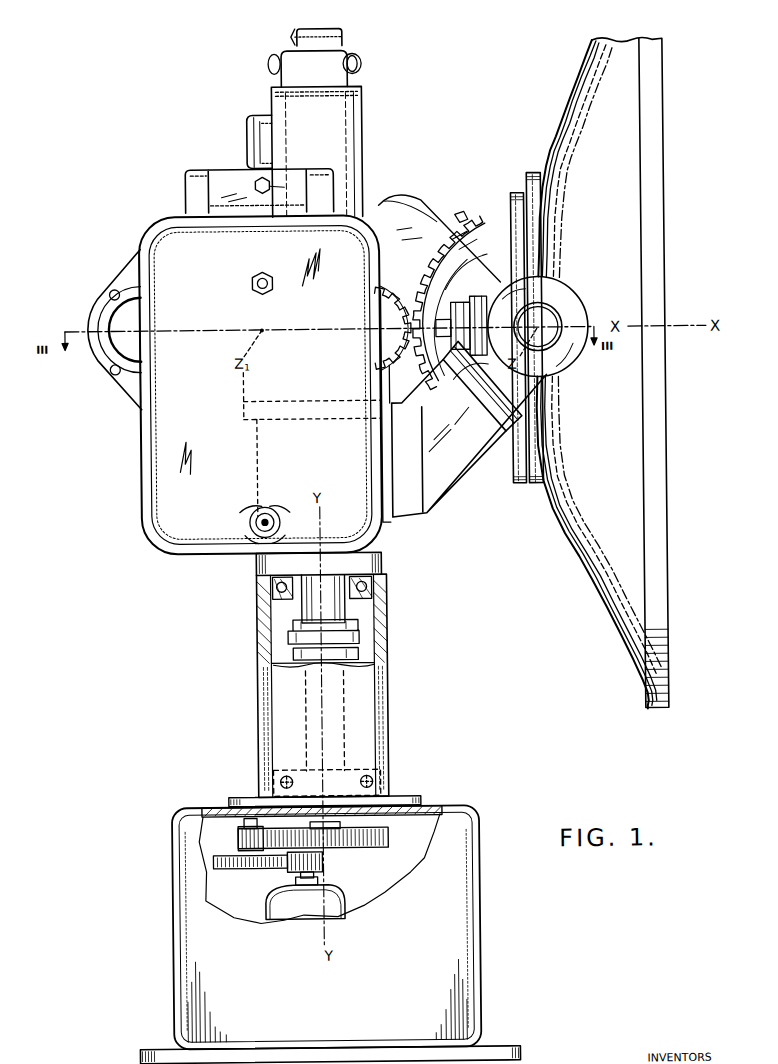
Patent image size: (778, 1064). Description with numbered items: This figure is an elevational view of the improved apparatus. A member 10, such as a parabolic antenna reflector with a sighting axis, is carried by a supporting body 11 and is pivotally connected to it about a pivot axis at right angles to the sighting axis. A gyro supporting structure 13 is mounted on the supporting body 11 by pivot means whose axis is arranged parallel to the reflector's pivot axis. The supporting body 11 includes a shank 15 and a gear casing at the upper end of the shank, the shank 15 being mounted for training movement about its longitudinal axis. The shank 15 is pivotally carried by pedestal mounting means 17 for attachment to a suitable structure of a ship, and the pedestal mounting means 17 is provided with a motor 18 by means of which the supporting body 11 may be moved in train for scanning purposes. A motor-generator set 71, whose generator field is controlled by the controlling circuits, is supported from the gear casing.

The member 10 is at (608, 473).
The supporting body 11 is at (452, 470).
The gyro supporting structure 13 is at (126, 455).
The shank 15 is at (343, 610).
The pedestal mounting means 17 is at (380, 700).
The motor 18 is at (264, 907).
The motor-generator set 71 is at (356, 119).